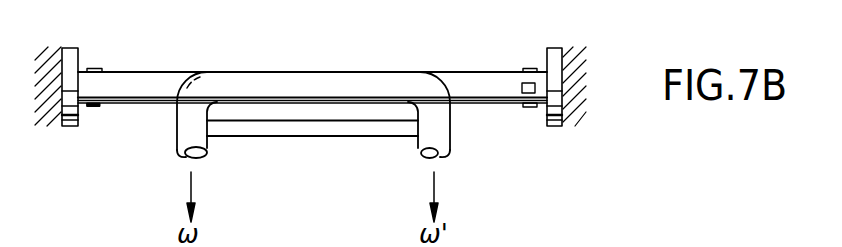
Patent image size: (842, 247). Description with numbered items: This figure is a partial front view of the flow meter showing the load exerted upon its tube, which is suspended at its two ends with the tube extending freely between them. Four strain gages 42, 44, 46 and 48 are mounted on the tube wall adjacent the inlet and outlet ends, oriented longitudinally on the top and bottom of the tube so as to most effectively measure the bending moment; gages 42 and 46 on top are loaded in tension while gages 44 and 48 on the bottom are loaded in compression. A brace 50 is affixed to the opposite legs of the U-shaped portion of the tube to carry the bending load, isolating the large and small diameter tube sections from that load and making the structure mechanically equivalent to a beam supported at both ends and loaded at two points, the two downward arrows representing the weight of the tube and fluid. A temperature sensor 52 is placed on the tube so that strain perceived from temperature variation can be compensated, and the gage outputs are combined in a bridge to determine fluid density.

The strain gage 42 is at (101, 69).
The strain gage 44 is at (94, 106).
The strain gage 46 is at (531, 68).
The strain gage 48 is at (533, 108).
The brace 50 is at (306, 132).
The temperature sensor 52 is at (521, 88).